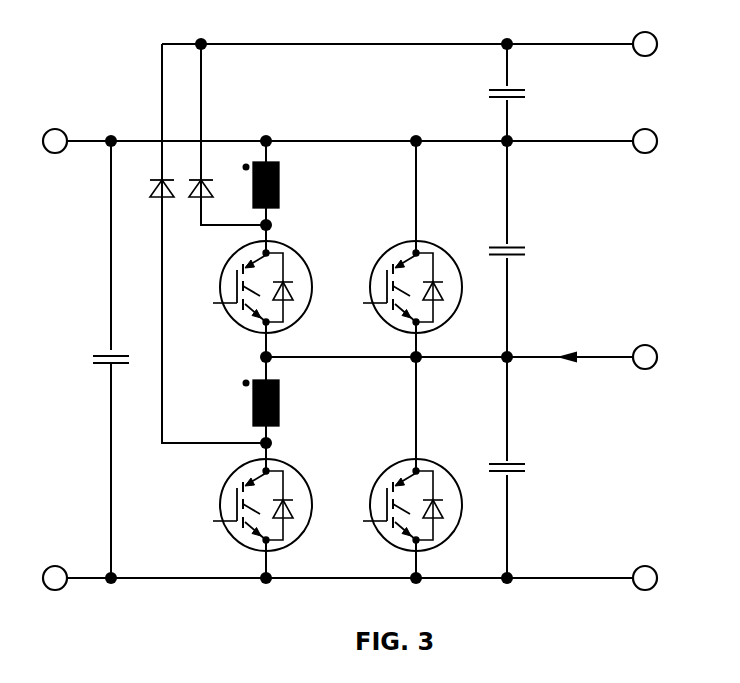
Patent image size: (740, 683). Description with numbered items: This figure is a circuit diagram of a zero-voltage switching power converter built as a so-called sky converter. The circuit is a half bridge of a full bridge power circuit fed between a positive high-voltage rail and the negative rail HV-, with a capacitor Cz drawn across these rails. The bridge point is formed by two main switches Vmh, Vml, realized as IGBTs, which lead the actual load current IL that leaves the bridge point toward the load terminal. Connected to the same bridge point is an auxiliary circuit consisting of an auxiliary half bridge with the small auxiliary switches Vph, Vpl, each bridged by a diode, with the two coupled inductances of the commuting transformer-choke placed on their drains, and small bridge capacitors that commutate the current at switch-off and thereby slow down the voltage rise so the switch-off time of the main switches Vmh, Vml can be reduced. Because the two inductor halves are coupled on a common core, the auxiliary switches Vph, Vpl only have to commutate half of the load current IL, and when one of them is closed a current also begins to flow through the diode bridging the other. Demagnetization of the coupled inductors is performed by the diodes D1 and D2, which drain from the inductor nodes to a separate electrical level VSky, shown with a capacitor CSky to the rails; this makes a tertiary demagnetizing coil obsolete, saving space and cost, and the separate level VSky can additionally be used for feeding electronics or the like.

The negative high-voltage DC terminal HV- is at (53, 569).
The sky voltage terminal VSky is at (641, 34).
The load current IL is at (607, 349).
The diode D1 is at (167, 180).
The diode D2 is at (206, 180).
The DC link capacitor Cz is at (108, 349).
The sky capacitor CSky is at (515, 84).
The auxiliary switch Vph is at (254, 287).
The main switch Vmh is at (404, 287).
The auxiliary switch Vpl is at (256, 505).
The main switch Vml is at (405, 505).